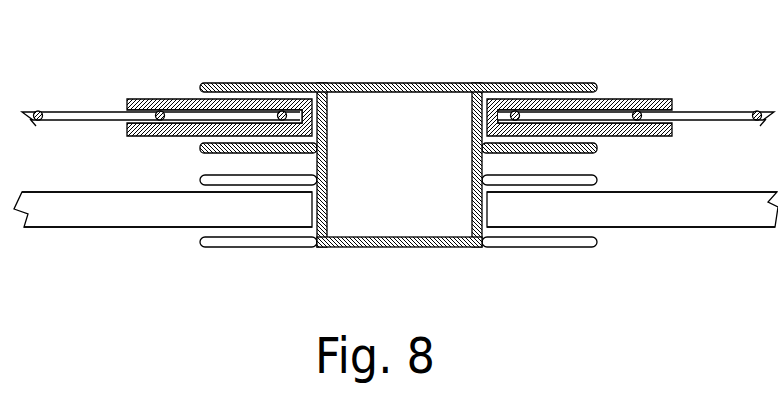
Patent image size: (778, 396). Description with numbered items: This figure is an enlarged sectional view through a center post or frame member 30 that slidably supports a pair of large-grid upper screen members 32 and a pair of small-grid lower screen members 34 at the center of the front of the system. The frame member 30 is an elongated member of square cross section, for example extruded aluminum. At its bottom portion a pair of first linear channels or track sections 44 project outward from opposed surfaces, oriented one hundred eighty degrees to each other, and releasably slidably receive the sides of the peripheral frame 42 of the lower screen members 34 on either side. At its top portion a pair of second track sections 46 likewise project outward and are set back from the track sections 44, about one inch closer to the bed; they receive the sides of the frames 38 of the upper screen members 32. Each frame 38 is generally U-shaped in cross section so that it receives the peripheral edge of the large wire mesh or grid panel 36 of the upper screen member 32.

The post or frame member 30 is at (423, 247).
The upper screen member 32 is at (65, 110).
The lower screen member 34 is at (185, 207).
The wire mesh or grid panel 36 is at (118, 114).
The peripheral frame 38 is at (175, 107).
The peripheral frame 42 is at (77, 213).
The first channel or track section 44 is at (277, 247).
The second channel or track section 46 is at (260, 83).